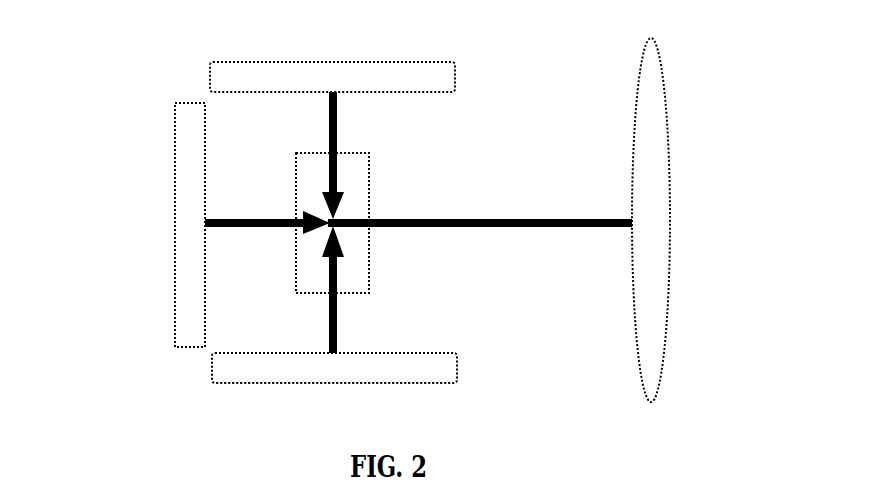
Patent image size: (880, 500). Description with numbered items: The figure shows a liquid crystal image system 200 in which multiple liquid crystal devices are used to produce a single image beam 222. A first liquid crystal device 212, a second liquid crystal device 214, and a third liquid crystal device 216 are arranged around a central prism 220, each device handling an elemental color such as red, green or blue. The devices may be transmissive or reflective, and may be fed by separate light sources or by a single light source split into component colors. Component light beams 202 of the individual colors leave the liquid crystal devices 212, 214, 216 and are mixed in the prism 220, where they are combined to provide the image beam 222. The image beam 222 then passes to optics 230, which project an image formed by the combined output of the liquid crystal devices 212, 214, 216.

The liquid crystal image system 200 is at (563, 417).
The component light beams 202 is at (337, 128).
The first liquid crystal device 212 is at (302, 75).
The second liquid crystal device 214 is at (187, 185).
The third liquid crystal device 216 is at (357, 372).
The prism 220 is at (365, 268).
The image beam 222 is at (462, 215).
The optics 230 is at (653, 375).